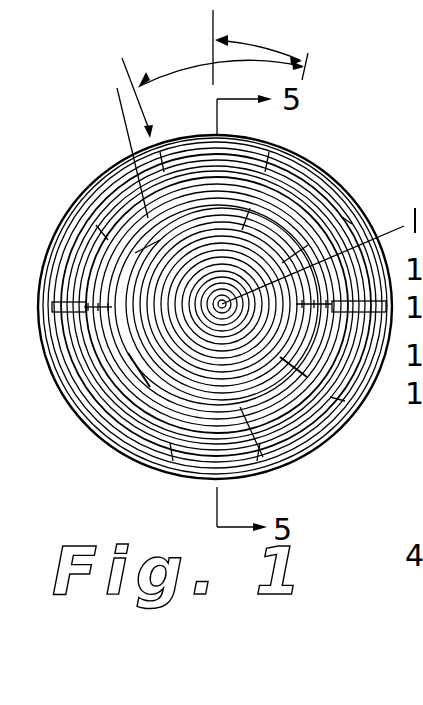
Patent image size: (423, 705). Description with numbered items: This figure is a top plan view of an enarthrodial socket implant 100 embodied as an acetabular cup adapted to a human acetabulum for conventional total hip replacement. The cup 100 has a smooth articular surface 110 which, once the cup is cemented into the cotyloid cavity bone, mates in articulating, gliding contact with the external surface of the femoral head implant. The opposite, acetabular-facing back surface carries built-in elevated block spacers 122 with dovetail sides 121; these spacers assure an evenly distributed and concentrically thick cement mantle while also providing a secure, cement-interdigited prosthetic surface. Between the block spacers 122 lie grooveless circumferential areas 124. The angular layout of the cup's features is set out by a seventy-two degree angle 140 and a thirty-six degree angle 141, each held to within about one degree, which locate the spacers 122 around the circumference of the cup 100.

The socket implant 100 is at (146, 60).
The articular surface 110 is at (298, 452).
The dovetail sides 121 is at (111, 141).
The elevated block spacers 122 is at (114, 316).
The grooveless circumferential areas 124 is at (130, 353).
The 72-degree angle 140 is at (406, 205).
The 36-degree angle 141 is at (188, 58).